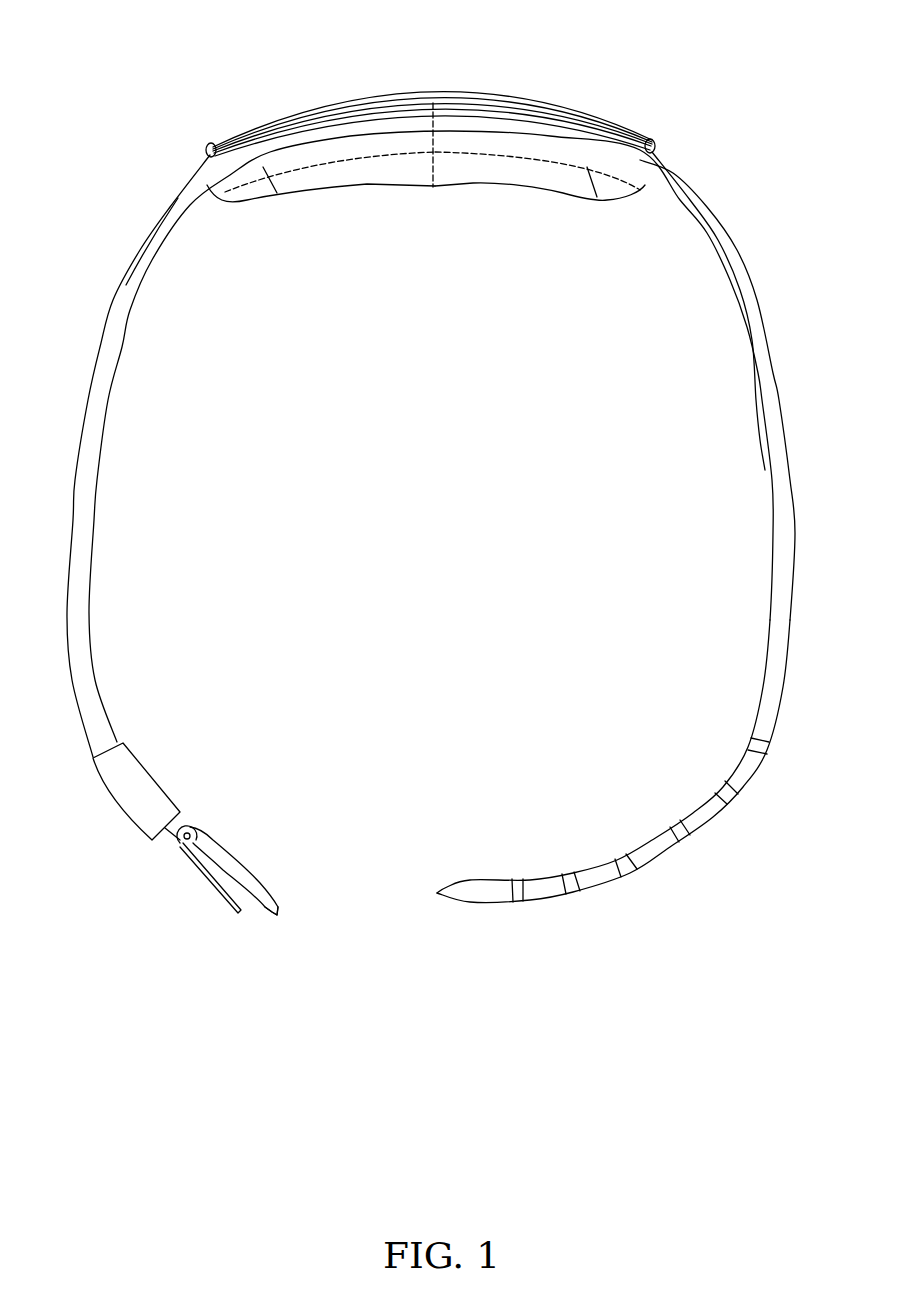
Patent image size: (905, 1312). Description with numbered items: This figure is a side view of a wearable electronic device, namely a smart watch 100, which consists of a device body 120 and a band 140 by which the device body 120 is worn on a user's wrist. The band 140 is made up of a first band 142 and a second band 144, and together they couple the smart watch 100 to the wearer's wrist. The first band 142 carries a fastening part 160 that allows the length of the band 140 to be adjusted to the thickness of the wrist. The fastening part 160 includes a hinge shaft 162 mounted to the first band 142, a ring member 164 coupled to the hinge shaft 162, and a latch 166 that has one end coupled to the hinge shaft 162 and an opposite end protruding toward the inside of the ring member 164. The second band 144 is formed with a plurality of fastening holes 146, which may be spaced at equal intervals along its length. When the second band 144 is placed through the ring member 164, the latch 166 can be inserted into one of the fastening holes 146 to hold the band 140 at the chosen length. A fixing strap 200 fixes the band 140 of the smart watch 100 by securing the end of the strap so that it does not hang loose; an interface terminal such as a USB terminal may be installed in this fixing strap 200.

The smart watch 100 is at (688, 50).
The device body 120 is at (460, 143).
The band 140 is at (433, 345).
The first band 142 is at (112, 342).
The second band 144 is at (755, 343).
The fastening holes 146 is at (512, 880).
The fastening part 160 is at (222, 879).
The hinge shaft 162 is at (185, 838).
The ring member 164 is at (276, 920).
The latch 166 is at (213, 890).
The fixing strap 200 is at (112, 812).